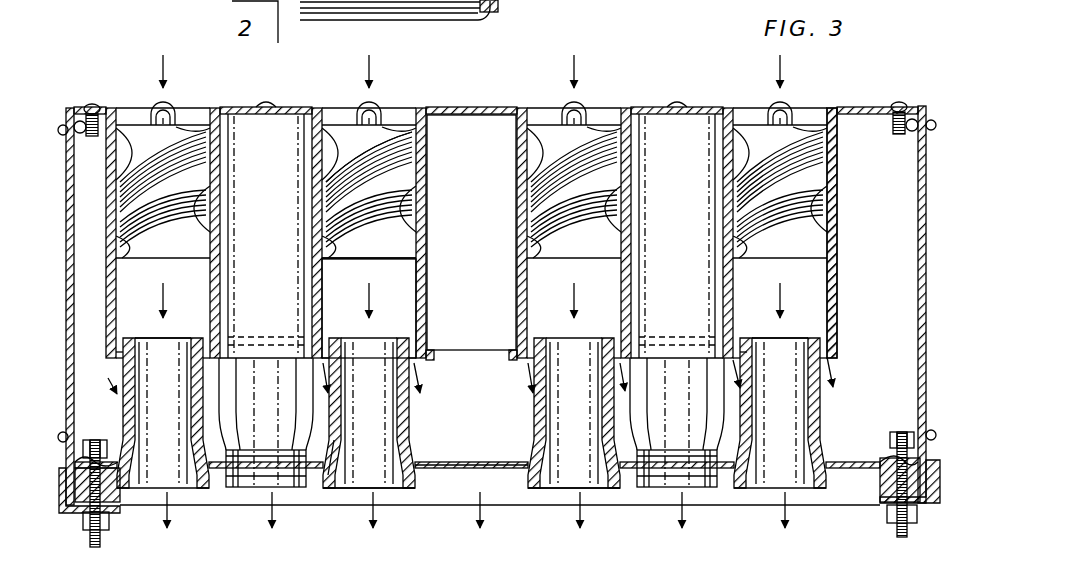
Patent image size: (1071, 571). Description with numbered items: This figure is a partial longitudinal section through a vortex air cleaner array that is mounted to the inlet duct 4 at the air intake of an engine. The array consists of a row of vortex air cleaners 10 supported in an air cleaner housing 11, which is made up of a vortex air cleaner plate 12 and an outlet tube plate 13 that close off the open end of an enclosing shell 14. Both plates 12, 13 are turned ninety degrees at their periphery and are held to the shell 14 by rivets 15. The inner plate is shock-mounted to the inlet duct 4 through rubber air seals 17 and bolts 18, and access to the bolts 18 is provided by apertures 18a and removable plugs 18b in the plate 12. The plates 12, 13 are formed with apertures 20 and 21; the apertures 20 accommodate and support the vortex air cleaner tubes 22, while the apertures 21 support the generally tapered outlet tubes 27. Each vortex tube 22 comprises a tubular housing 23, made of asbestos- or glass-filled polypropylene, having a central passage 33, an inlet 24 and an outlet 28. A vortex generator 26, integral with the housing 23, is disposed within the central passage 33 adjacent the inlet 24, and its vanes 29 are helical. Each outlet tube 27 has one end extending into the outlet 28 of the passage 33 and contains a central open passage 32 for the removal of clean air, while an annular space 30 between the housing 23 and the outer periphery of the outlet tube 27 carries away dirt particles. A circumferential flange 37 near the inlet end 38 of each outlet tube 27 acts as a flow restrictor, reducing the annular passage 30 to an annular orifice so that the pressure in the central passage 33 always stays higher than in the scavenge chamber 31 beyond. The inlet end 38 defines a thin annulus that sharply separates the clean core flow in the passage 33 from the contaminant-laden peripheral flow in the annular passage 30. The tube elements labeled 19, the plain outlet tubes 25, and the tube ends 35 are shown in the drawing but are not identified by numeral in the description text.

The inlet duct 4 is at (481, 555).
The vortex air cleaner 10 is at (104, 326).
The air cleaner housing 11 is at (66, 286).
The vortex air cleaner plate 12 is at (471, 107).
The outlet tube plate 13 is at (455, 462).
The enclosing shell 14 is at (928, 292).
The rivets 15 is at (60, 128).
The rubber air seals 17 is at (118, 500).
The bolts 18 is at (97, 440).
The apertures 18a is at (97, 108).
The removable plugs 18b is at (84, 106).
The bypass tube 19 is at (300, 107).
The apertures 20 is at (405, 110).
The apertures 21 is at (409, 481).
The vortex air cleaner tube 22 is at (846, 264).
The tubular housing 23 is at (525, 257).
The inlet 24 is at (531, 108).
The outlet tube 25 is at (218, 452).
The vortex generator 26 is at (408, 218).
The outlet tube 27 is at (406, 420).
The outlet 28 is at (432, 364).
The vanes 29 is at (400, 186).
The annular space 30 is at (860, 329).
The scavenge chamber 31 is at (458, 314).
The central open passage 32 is at (357, 422).
The central passage 33 is at (332, 304).
The nozzle outlet 35 is at (384, 490).
The flange 37 is at (126, 350).
The inlet end 38 is at (174, 335).